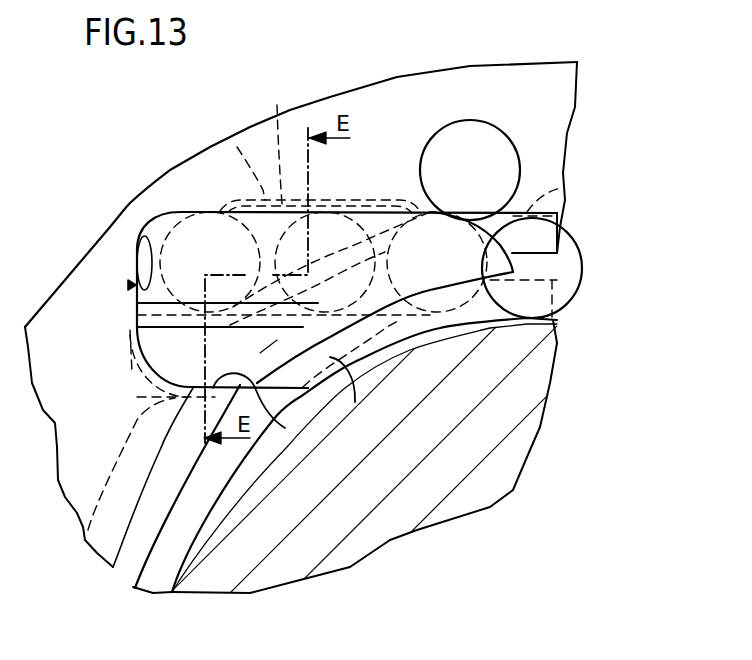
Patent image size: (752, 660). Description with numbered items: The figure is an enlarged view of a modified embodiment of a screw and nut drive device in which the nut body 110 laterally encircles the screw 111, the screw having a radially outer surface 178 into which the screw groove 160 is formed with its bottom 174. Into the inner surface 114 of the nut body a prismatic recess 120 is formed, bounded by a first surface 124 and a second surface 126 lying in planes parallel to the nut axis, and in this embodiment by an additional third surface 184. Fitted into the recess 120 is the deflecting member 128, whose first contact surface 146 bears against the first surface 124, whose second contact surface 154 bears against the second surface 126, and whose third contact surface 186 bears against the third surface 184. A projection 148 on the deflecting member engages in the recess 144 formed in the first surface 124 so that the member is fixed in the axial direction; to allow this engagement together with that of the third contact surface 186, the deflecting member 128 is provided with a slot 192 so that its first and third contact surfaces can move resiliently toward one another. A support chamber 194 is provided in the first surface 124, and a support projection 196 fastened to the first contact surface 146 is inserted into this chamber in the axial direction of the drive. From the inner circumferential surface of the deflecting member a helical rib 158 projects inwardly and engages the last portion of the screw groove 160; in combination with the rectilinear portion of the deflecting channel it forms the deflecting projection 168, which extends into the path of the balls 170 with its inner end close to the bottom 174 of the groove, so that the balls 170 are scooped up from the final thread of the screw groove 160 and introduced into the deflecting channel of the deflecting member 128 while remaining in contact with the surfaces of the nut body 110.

The nut body 110 is at (398, 97).
The screw 111 is at (473, 497).
The inner surface 114 is at (112, 555).
The recess 120 is at (137, 267).
The first surface 124 is at (566, 188).
The second surface 126 is at (130, 285).
The deflecting member 128 is at (142, 343).
The recess in first surface 144 is at (231, 141).
The first contact surface 146 is at (423, 220).
The projection 148 is at (277, 111).
The second contact surface 154 is at (127, 218).
The helical rib 158 is at (332, 355).
The screw groove 160 is at (160, 577).
The deflecting projection 168 is at (443, 323).
The balls 170 is at (568, 278).
The bottom of screw groove 174 is at (207, 512).
The radially outer surface 178 is at (137, 572).
The third surface 184 is at (174, 402).
The third contact surface 186 is at (283, 427).
The slot 192 is at (137, 320).
The support chamber 194 is at (428, 133).
The support projection 196 is at (487, 153).